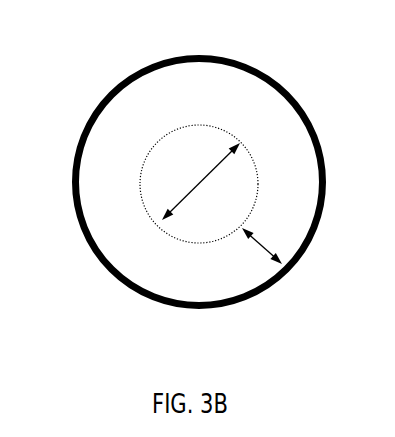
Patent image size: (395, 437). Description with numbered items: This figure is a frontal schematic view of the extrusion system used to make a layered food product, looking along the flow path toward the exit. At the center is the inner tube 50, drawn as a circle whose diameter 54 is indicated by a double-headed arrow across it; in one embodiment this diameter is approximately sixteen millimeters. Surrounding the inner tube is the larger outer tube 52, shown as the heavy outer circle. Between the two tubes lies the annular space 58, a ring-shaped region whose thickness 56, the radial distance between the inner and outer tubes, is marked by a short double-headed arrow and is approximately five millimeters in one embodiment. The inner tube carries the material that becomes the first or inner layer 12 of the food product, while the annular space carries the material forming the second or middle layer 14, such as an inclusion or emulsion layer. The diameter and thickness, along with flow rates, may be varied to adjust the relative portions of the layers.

The inner layer 12 is at (162, 162).
The middle layer 14 is at (175, 95).
The inner tube 50 is at (258, 170).
The outer tube 52 is at (263, 73).
The diameter 54 is at (185, 198).
The thickness 56 is at (242, 228).
The annular space 58 is at (163, 273).